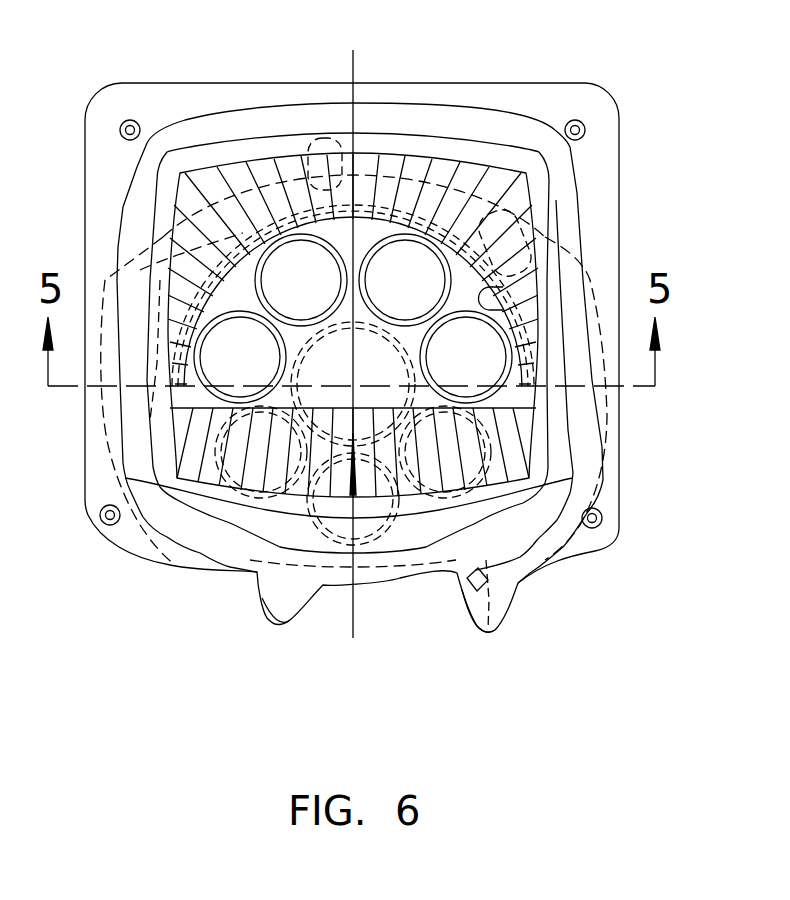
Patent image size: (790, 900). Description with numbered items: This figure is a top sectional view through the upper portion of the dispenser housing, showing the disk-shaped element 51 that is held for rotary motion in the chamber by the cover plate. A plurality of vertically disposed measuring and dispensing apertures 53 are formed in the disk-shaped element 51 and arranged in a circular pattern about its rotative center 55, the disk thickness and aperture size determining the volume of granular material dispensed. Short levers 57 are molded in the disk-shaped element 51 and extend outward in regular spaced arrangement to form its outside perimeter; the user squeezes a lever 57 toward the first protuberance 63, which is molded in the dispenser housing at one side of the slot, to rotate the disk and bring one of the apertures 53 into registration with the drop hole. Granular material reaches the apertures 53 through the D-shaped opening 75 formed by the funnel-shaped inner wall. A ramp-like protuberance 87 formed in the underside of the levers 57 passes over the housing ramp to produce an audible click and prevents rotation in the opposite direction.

The disk-shaped element 51 is at (237, 290).
The measuring and dispensing apertures 53 is at (220, 343).
The rotative center 55 is at (355, 392).
The short levers 57 is at (343, 168).
The first protuberance 63 is at (487, 620).
The D-shaped opening 75 is at (480, 313).
The protuberance (ramp) 87 is at (467, 572).